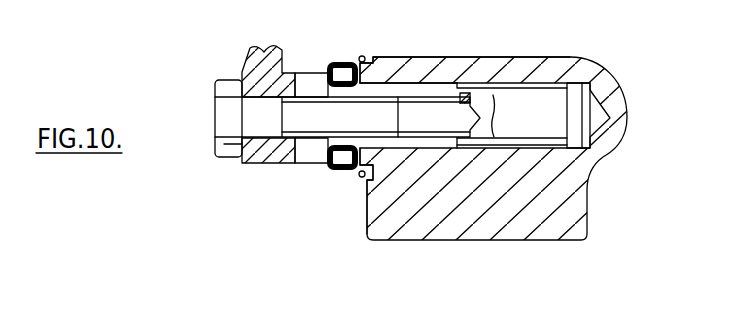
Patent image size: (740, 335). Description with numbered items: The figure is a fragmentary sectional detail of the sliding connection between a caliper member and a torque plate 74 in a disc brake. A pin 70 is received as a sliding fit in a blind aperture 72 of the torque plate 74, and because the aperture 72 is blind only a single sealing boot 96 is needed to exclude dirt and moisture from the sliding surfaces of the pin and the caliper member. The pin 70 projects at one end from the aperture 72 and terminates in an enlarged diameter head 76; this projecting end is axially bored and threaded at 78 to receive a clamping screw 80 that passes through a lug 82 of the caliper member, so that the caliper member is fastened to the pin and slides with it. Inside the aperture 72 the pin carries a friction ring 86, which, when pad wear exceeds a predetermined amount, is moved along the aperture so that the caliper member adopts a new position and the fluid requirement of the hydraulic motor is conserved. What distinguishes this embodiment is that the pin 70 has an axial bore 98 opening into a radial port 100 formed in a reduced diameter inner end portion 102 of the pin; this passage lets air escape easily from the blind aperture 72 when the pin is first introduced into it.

The pin 70 is at (426, 141).
The aperture 72 is at (435, 57).
The torque plate 74 is at (518, 226).
The enlarged diameter head 76 is at (318, 80).
The axially bored and threaded portion 78 is at (382, 96).
The clamping screw 80 is at (270, 121).
The lug 82 is at (287, 150).
The friction ring 86 is at (582, 137).
The sealing boot 96 is at (337, 60).
The axial bore 98 is at (445, 122).
The radial port 100 is at (466, 93).
The reduced diameter inner end portion 102 is at (547, 82).